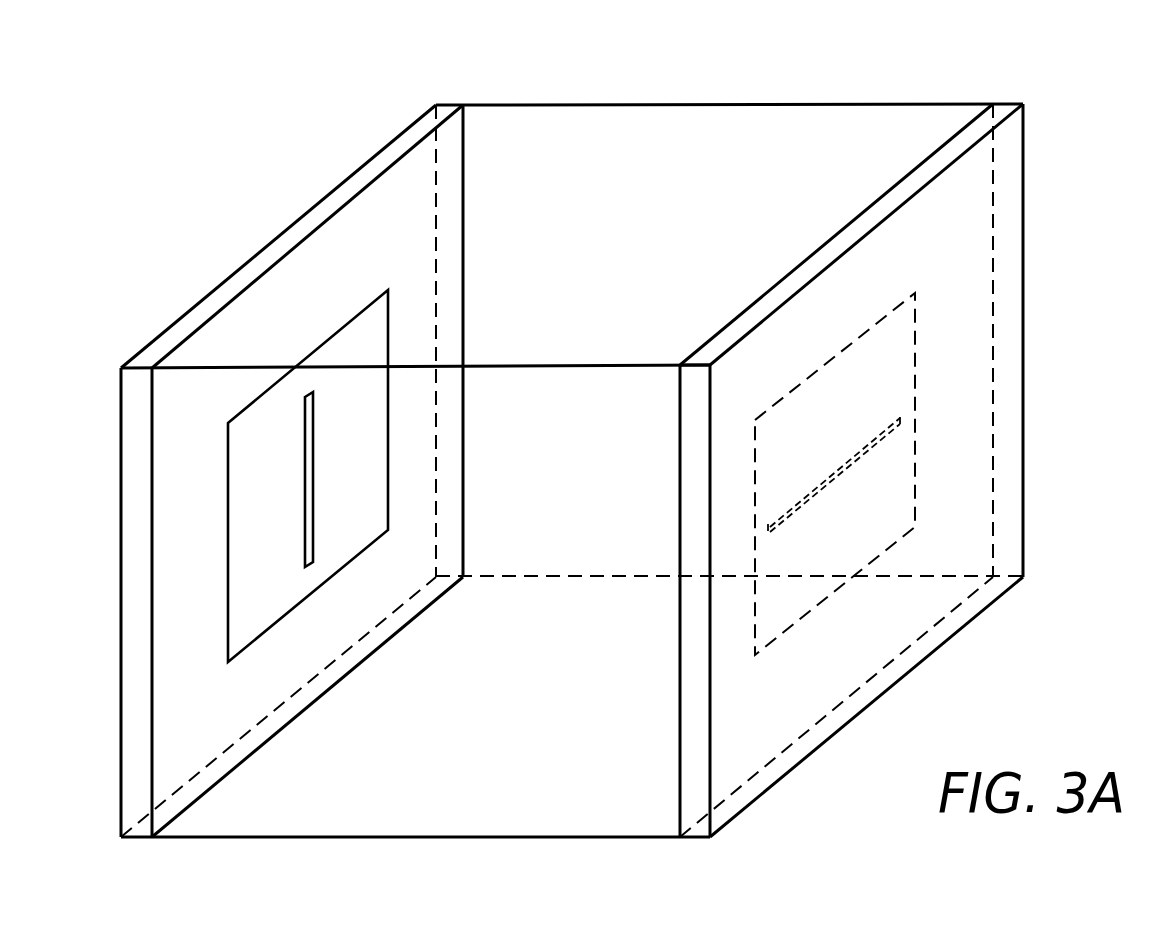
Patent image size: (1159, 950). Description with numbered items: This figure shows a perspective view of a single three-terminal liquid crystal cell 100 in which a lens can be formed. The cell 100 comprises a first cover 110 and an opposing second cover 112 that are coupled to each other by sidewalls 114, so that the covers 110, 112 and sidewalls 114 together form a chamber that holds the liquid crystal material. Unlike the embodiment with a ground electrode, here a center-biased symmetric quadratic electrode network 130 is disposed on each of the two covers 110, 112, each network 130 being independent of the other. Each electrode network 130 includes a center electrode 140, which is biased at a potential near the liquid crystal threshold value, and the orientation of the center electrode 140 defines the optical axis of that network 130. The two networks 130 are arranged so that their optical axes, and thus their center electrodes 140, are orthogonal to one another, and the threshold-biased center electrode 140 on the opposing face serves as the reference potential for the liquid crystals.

The liquid crystal cell 100 is at (259, 86).
The first cover 110 is at (452, 105).
The second cover 112 is at (1021, 104).
The sidewalls 114 is at (615, 105).
The center-biased quadratic electrode network 130 is at (222, 663).
The center electrode 140 is at (310, 395).